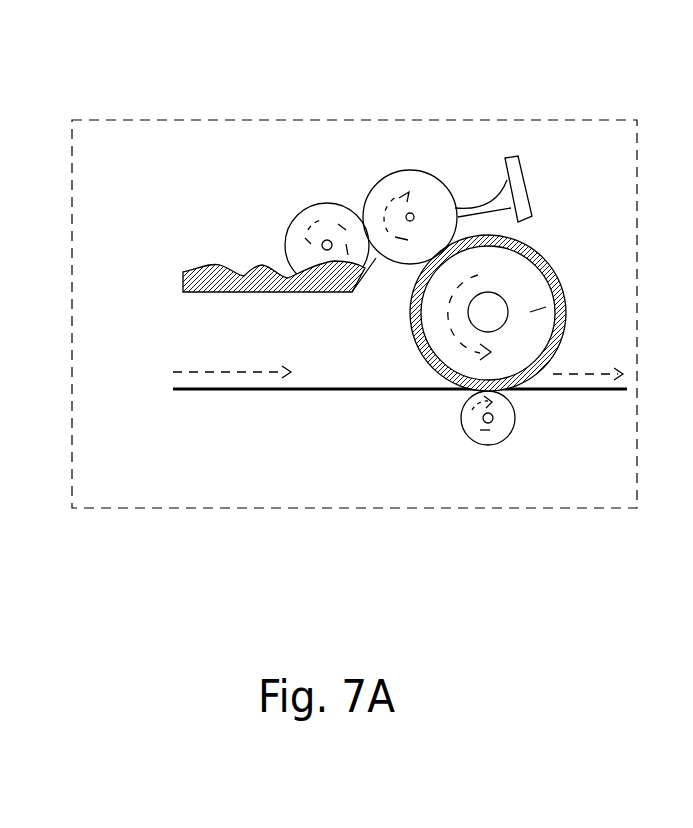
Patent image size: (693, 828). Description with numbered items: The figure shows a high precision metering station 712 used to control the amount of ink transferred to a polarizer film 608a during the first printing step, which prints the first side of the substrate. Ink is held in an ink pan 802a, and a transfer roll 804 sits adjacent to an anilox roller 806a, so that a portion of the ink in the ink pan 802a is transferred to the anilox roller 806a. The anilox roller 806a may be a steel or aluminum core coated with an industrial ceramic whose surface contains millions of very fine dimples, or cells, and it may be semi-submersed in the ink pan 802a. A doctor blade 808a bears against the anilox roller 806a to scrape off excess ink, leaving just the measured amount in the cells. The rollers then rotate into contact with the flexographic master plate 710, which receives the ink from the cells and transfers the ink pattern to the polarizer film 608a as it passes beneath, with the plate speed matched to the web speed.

The high precision metering station 712 is at (323, 120).
The ink pan 802a is at (185, 268).
The transfer roll 804 is at (287, 240).
The anilox roller 806a is at (378, 184).
The doctor blade 808a is at (528, 214).
The first master plate 710 is at (563, 290).
The polarizer film 608a is at (282, 391).